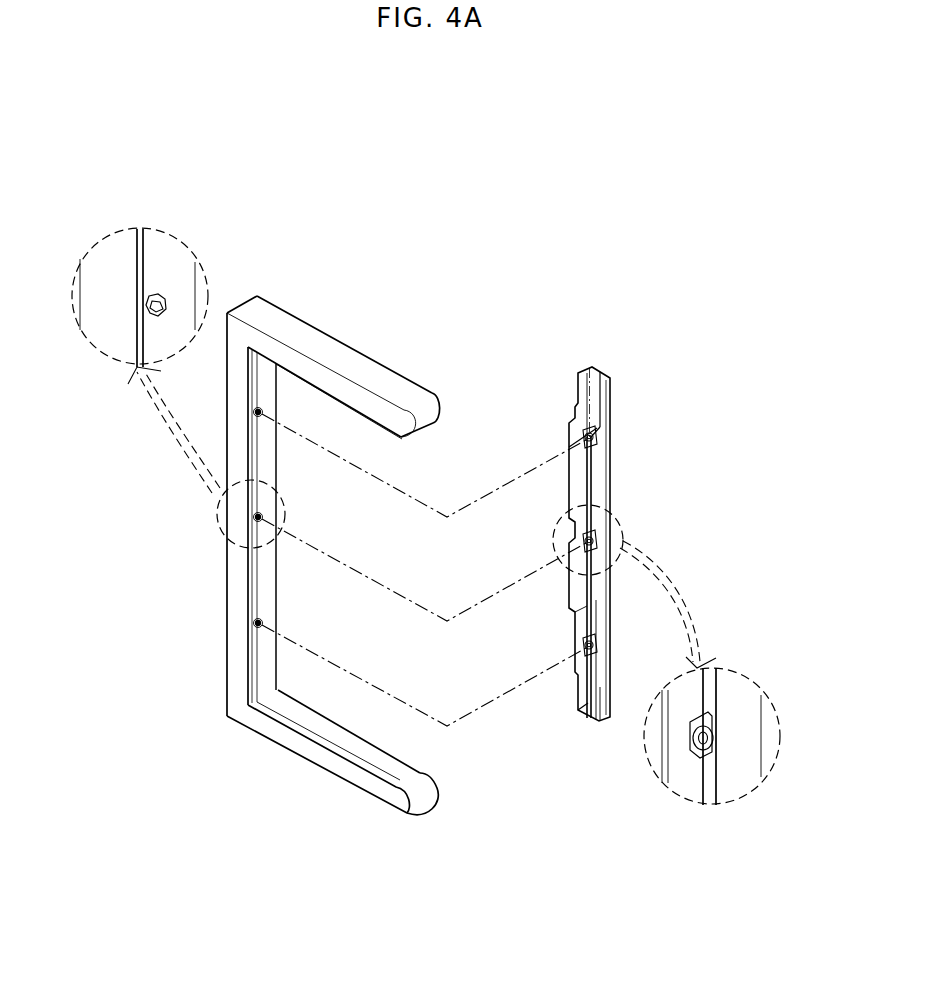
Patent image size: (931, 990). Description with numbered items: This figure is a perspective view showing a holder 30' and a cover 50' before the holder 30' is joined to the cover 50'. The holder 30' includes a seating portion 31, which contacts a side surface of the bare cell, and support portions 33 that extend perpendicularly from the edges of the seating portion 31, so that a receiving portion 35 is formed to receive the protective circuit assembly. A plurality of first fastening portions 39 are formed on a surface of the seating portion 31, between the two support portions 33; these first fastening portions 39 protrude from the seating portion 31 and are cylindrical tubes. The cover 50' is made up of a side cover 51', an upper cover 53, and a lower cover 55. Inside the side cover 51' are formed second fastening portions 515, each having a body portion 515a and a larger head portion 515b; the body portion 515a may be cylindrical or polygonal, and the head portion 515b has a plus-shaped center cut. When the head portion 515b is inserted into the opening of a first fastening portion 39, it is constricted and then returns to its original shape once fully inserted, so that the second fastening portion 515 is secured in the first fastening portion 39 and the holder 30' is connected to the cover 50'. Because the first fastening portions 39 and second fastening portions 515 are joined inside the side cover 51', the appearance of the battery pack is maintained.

The cover 50' is at (275, 484).
The side cover 51' is at (176, 472).
The upper cover 53 is at (343, 357).
The lower cover 55 is at (333, 764).
The second fastening portion 515 is at (245, 160).
The body portion 515a is at (149, 296).
The head portion 515b is at (165, 303).
The holder 30' is at (646, 588).
The seating portion 31 is at (600, 371).
The support portion 33 is at (607, 460).
The receiving portion 35 is at (580, 482).
The first fastening portion 39 is at (580, 645).